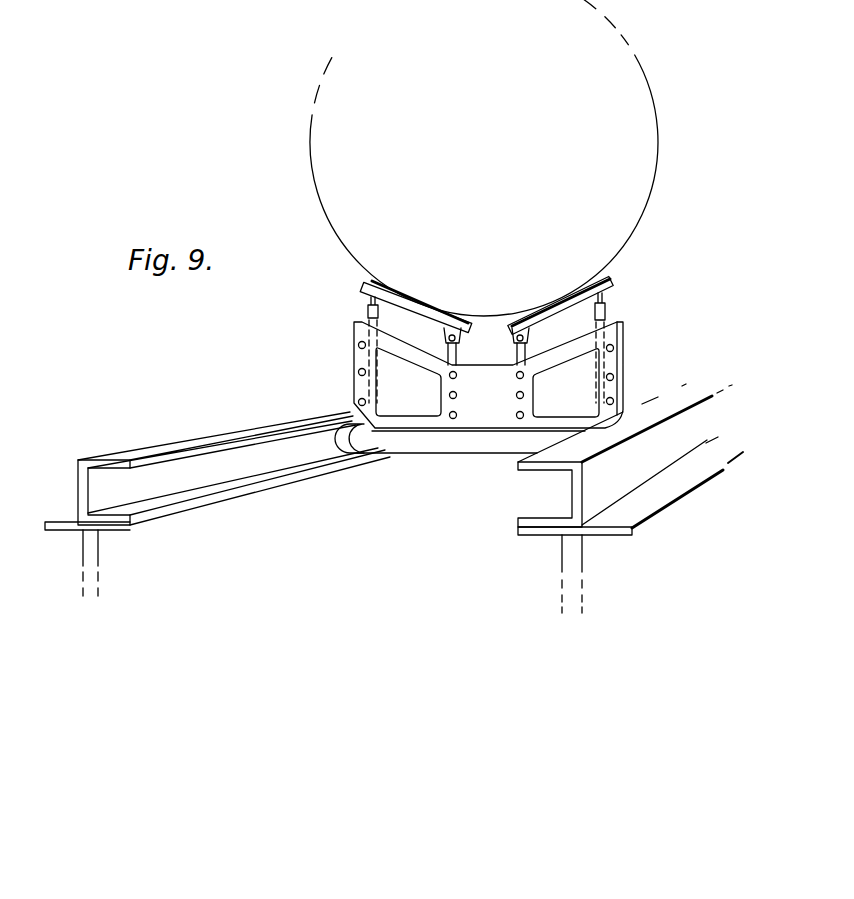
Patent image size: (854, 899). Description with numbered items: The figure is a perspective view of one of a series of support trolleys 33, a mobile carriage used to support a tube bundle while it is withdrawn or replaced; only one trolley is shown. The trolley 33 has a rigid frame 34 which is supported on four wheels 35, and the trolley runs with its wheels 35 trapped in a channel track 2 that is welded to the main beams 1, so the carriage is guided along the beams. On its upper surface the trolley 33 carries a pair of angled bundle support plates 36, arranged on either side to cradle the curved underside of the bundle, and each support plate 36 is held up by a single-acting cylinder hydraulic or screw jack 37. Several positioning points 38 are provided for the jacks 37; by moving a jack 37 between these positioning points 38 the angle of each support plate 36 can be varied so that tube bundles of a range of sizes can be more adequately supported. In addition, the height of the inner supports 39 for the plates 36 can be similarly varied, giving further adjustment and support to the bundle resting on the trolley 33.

The main beam 1 is at (83, 558).
The channel track 2 is at (98, 480).
The support trolley 33 is at (353, 328).
The rigid frame 34 is at (485, 417).
The wheel 35 is at (351, 416).
The angled bundle support plate 36 is at (368, 282).
The single-acting cylinder hydraulic or screw jack 37 is at (366, 312).
The positioning point 38 is at (358, 402).
The inner support 39 is at (527, 352).